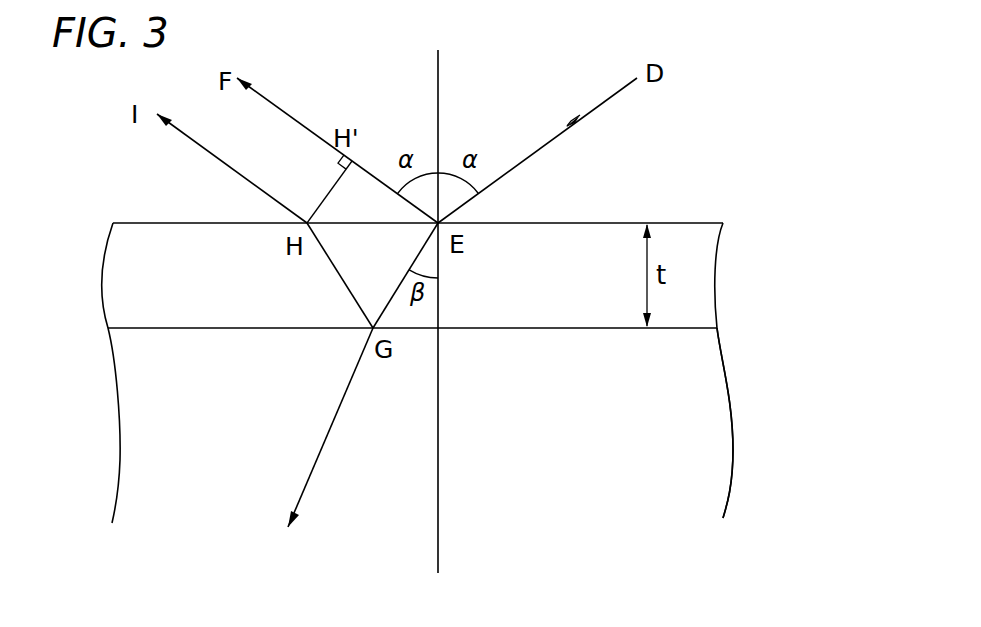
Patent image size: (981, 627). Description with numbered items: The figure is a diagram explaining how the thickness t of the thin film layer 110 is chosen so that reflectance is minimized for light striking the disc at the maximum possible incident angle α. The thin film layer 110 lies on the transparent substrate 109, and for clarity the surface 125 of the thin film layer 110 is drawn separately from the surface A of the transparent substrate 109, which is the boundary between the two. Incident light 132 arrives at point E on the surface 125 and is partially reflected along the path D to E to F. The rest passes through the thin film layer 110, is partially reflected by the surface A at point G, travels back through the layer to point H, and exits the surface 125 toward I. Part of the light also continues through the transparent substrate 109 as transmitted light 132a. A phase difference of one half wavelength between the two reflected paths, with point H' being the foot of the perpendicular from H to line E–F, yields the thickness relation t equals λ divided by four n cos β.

The thin film layer 110 is at (462, 335).
The surface of the thin film layer 125 is at (695, 223).
The surface of the transparent substrate A is at (690, 328).
The transparent substrate 109 is at (680, 448).
The incident light 132 is at (603, 103).
The transmitted light 132a is at (315, 468).